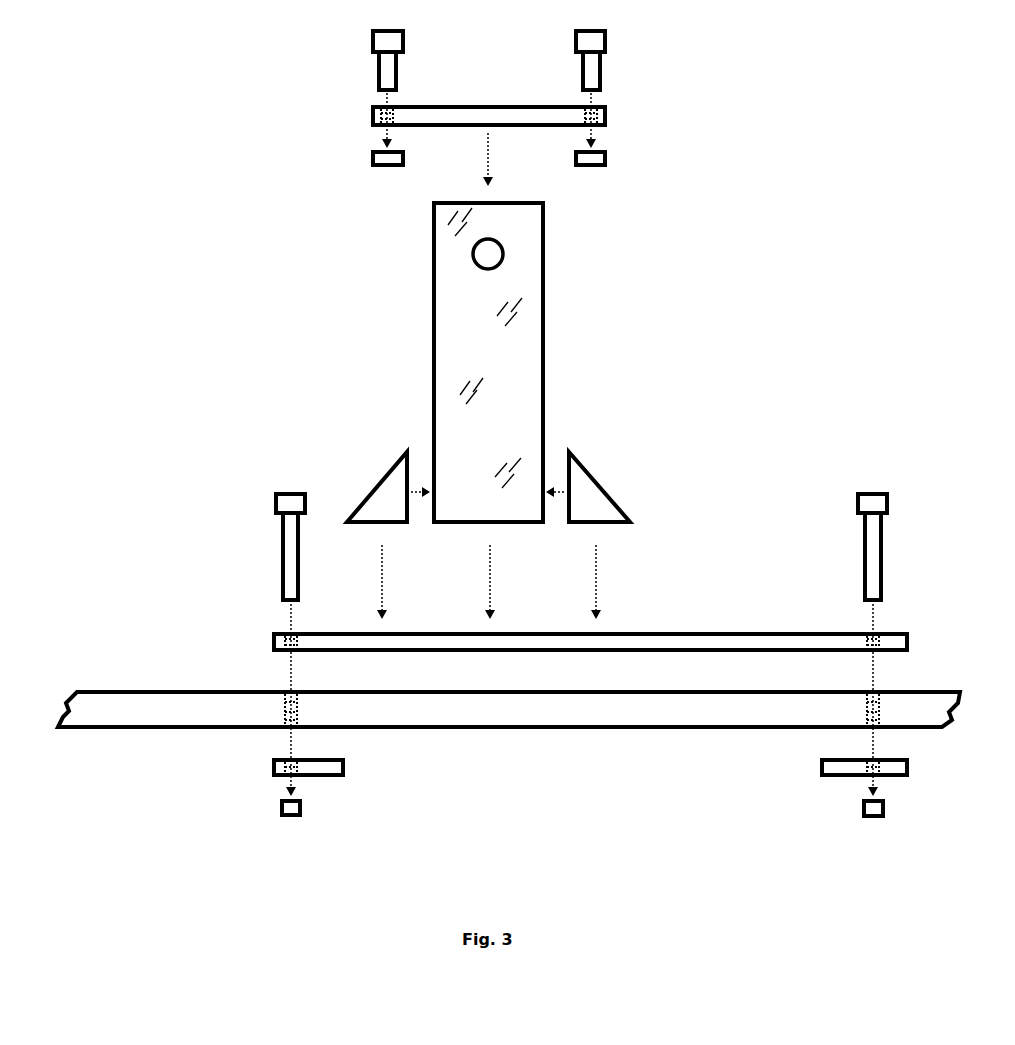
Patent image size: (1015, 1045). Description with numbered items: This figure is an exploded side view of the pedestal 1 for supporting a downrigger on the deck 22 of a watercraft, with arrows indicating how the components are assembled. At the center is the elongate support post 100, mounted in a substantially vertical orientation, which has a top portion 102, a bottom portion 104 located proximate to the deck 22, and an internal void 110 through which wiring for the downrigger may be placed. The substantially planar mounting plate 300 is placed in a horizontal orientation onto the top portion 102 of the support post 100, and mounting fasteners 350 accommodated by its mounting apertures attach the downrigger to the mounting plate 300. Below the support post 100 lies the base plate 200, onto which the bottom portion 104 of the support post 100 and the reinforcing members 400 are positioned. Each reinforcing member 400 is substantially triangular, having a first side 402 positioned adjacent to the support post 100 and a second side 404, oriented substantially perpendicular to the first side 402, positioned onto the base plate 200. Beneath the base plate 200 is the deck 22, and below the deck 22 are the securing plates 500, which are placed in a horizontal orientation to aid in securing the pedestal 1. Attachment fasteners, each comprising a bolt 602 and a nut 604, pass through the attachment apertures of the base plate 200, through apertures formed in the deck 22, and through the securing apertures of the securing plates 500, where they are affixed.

The pedestal 1 is at (290, 223).
The deck 22 is at (125, 693).
The support post 100 is at (545, 297).
The top portion 102 is at (545, 204).
The bottom portion 104 is at (520, 523).
The internal void 110 is at (485, 251).
The base plate 200 is at (748, 634).
The mounting plate 300 is at (605, 106).
The mounting fasteners 350 is at (379, 61).
The reinforcing members 400 is at (372, 488).
The first side 402 is at (410, 487).
The second side 404 is at (377, 523).
The securing plates 500 is at (343, 775).
The bolt 602 is at (285, 493).
The nut 604 is at (281, 815).